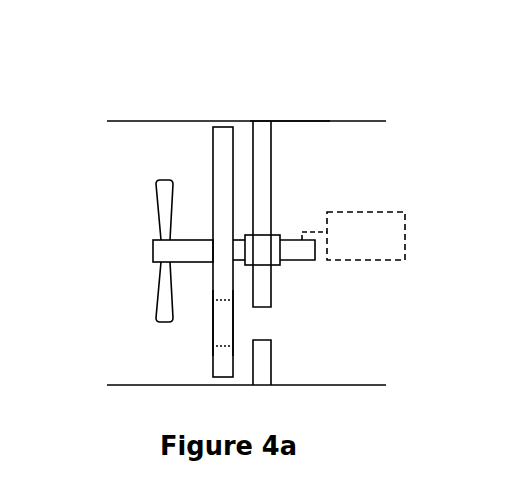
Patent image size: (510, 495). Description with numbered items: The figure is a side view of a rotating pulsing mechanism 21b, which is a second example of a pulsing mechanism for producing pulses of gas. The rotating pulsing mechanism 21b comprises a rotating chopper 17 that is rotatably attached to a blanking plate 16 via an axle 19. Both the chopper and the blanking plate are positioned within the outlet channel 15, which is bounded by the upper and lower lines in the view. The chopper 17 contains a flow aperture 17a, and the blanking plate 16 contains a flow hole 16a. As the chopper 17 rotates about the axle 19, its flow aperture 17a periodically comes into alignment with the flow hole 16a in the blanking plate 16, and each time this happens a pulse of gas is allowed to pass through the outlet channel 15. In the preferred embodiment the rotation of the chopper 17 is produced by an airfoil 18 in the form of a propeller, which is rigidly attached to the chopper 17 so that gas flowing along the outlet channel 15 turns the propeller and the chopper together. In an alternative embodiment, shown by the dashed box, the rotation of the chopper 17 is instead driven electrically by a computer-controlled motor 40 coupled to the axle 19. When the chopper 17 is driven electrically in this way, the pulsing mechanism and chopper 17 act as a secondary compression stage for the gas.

The outlet channel 15 is at (127, 122).
The rotating pulsing mechanism 21b is at (331, 68).
The rotating chopper 17 is at (212, 182).
The flow aperture 17a is at (213, 328).
The blanking plate 16 is at (270, 195).
The flow hole 16a is at (270, 343).
The airfoil 18 is at (153, 192).
The axle 19 is at (295, 263).
The computer-controlled motor 40 is at (353, 236).